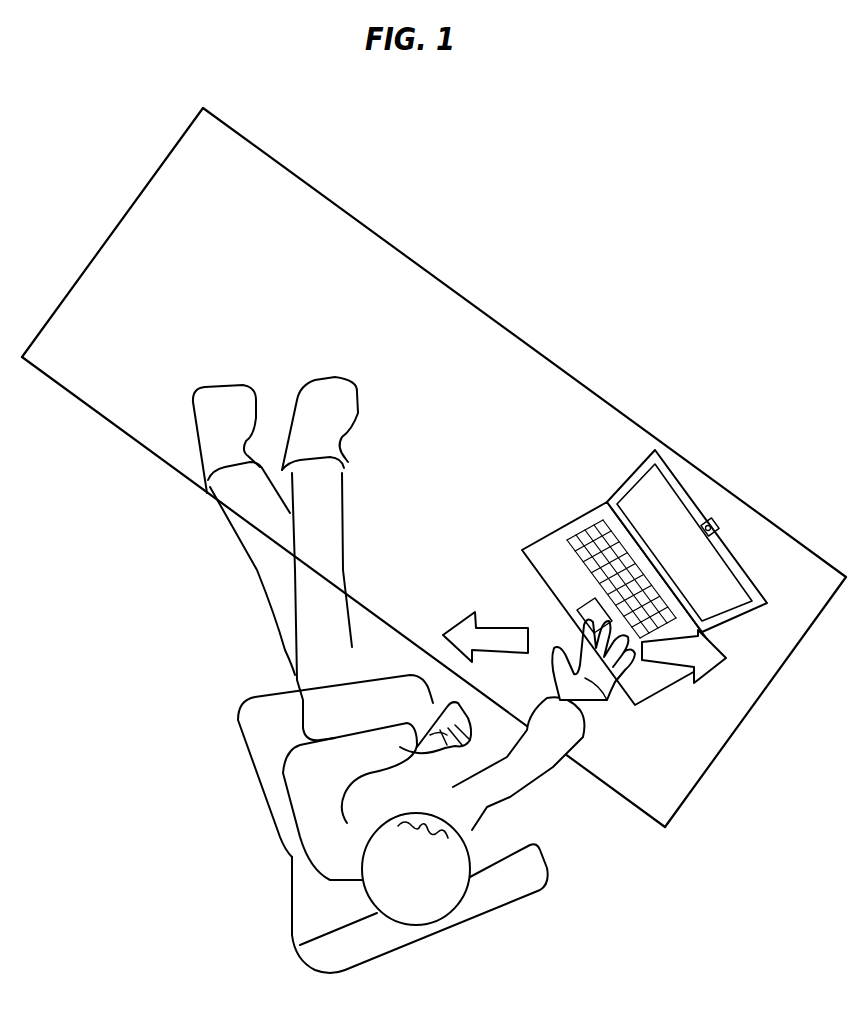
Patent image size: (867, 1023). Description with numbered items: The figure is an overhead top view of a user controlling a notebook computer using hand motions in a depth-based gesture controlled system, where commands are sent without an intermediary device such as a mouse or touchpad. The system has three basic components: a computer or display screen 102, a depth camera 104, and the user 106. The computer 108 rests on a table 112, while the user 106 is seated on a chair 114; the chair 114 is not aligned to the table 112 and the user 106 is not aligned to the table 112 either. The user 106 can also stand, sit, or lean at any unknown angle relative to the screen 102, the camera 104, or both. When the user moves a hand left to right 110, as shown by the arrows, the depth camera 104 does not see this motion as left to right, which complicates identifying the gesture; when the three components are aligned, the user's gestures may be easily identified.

The display screen 102 is at (705, 592).
The depth camera 104 is at (714, 518).
The user 106 is at (497, 789).
The computer 108 is at (542, 560).
The hand moving left to right 110 is at (600, 700).
The table 112 is at (375, 233).
The chair 114 is at (248, 768).